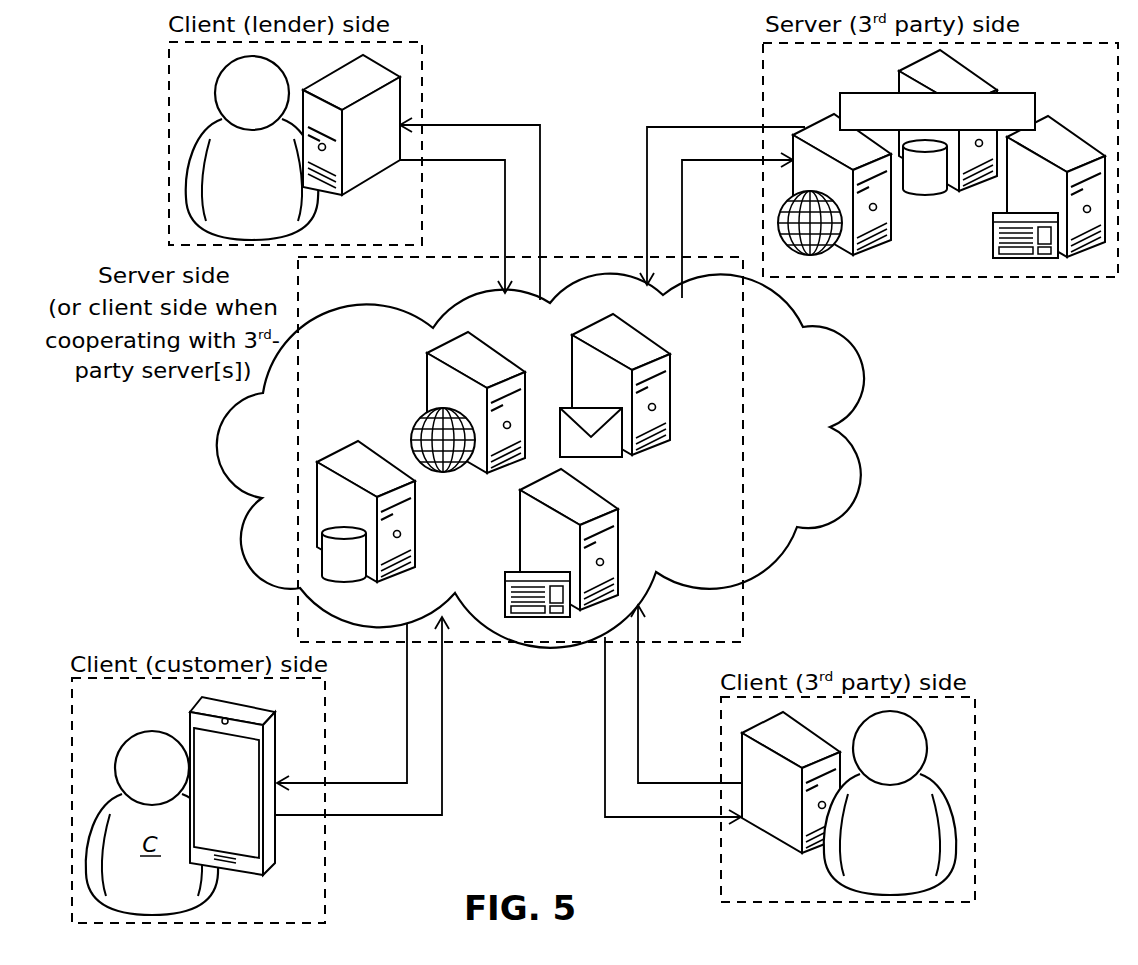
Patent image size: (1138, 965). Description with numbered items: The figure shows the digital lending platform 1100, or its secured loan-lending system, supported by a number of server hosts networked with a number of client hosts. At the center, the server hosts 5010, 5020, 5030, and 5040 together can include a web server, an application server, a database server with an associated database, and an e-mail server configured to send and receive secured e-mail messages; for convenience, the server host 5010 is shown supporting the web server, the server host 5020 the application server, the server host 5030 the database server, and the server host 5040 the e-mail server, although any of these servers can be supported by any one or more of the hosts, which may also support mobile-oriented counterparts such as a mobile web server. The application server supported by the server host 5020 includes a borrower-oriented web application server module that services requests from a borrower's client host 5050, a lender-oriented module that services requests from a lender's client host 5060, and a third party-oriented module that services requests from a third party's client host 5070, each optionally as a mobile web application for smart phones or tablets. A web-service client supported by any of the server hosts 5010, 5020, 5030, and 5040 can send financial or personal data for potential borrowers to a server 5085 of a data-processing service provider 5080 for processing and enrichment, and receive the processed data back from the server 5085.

The digital lending platform 1100 is at (185, 432).
The server host 5010 is at (543, 378).
The server host 5020 is at (510, 505).
The server host 5030 is at (395, 450).
The server host 5040 is at (680, 417).
The borrower's client host 5050 is at (270, 740).
The lender's client host 5060 is at (367, 85).
The third party's client host 5070 is at (777, 737).
The data-processing service provider 5080 is at (935, 253).
The server 5085 is at (1025, 126).